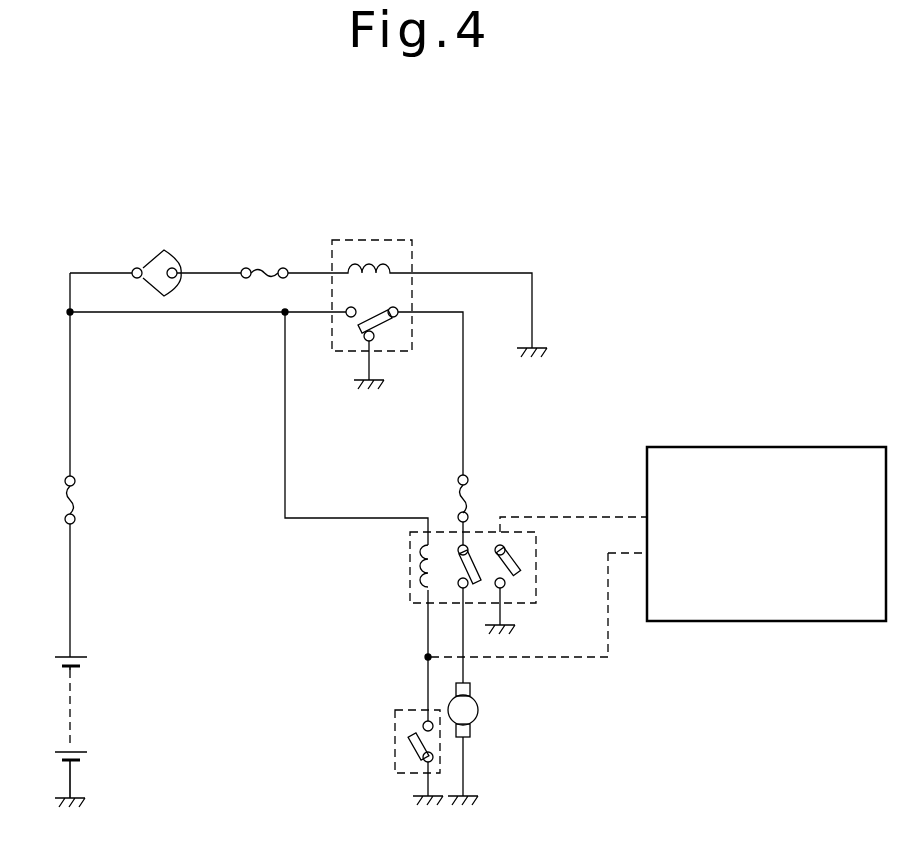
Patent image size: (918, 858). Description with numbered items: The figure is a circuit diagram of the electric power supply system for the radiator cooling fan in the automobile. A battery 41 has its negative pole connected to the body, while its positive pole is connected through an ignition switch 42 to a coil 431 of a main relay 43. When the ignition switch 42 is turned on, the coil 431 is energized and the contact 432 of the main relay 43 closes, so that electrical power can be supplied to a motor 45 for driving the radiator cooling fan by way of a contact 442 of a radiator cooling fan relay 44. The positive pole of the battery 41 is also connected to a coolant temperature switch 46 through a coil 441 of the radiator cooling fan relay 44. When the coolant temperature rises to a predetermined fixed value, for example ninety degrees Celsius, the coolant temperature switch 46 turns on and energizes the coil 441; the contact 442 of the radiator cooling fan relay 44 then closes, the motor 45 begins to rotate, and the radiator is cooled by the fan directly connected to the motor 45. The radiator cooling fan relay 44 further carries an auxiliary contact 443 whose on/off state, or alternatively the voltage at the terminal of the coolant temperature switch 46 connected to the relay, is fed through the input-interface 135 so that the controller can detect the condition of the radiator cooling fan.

The battery 41 is at (88, 662).
The ignition switch 42 is at (156, 257).
The main relay 43 is at (350, 240).
The coil 431 is at (378, 263).
The contact 432 is at (380, 327).
The radiator cooling fan relay 44 is at (540, 543).
The coil 441 is at (420, 573).
The contact 442 is at (478, 555).
The auxiliary contact 443 is at (523, 567).
The motor 45 is at (479, 710).
The coolant temperature switch 46 is at (395, 727).
The input-interface 135 is at (745, 447).